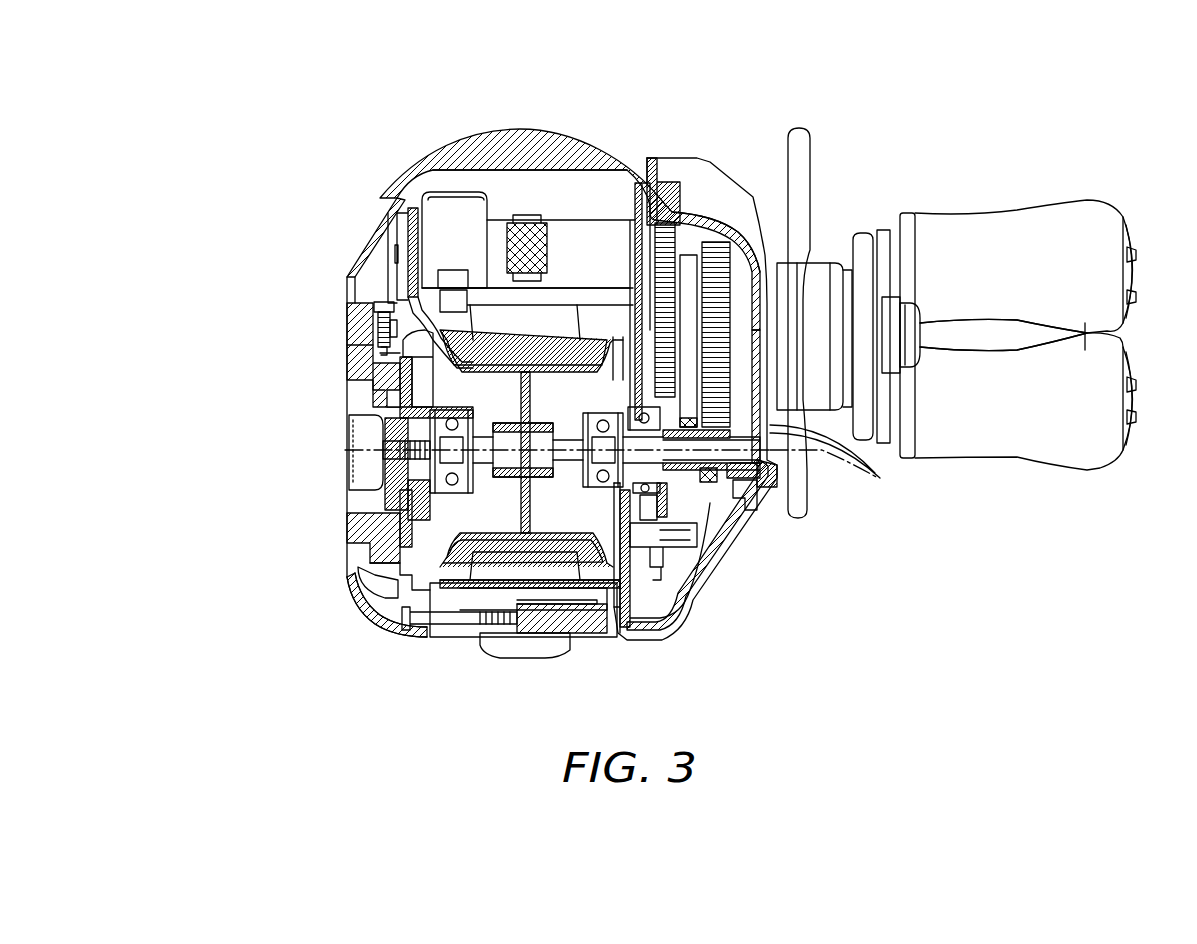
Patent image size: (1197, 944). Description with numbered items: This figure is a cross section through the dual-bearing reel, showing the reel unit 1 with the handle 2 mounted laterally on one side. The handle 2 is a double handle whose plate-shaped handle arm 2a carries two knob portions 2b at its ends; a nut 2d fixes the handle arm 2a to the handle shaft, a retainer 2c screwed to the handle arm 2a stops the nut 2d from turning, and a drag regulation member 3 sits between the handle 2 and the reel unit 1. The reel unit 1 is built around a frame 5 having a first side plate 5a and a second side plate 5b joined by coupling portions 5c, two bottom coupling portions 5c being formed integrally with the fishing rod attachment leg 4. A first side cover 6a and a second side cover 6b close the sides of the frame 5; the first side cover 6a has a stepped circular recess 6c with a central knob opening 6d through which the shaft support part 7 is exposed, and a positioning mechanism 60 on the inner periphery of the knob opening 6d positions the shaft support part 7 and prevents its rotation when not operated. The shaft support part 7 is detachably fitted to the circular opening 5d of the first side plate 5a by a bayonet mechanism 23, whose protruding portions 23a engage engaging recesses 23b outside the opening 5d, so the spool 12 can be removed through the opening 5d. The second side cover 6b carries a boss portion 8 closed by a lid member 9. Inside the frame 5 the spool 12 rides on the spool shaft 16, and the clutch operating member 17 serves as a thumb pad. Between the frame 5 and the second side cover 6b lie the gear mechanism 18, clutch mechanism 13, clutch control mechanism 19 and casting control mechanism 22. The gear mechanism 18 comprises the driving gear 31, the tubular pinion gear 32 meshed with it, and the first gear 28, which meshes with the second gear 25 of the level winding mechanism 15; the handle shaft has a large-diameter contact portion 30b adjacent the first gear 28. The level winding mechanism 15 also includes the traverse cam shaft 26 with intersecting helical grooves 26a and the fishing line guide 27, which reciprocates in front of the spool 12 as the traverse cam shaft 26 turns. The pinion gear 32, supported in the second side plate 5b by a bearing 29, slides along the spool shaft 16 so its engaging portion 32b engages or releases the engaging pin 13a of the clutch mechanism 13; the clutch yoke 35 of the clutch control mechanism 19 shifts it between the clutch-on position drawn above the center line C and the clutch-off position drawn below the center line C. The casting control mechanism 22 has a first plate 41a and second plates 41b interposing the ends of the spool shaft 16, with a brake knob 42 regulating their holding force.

The reel unit 1 is at (606, 172).
The handle 2 is at (935, 185).
The handle arm 2a is at (872, 235).
The knob portions 2b is at (1070, 222).
The retainer 2c is at (900, 257).
The nut 2d is at (913, 360).
The drag regulation member 3 is at (770, 493).
The fishing rod attachment leg 4 is at (545, 648).
The frame 5 is at (628, 168).
The first side plate 5a is at (405, 275).
The second side plate 5b is at (650, 178).
The coupling portions 5c is at (515, 610).
The circular opening 5d is at (380, 312).
The first side cover 6a is at (359, 205).
The second side cover 6b is at (741, 559).
The circular recess 6c is at (365, 343).
The knob opening 6d is at (355, 515).
The shaft support part 7 is at (370, 408).
The boss portion 8 is at (765, 490).
The lid member 9 is at (778, 485).
The spool 12 is at (560, 345).
The clutch mechanism 13 is at (600, 485).
The engaging pin 13a is at (615, 430).
The level winding mechanism 15 is at (518, 228).
The spool shaft 16 is at (500, 432).
The clutch operating member 17 is at (535, 630).
The gear mechanism 18 is at (690, 262).
The clutch control mechanism 19 is at (716, 505).
The casting control mechanism 22 is at (341, 449).
The bayonet mechanism 23 is at (375, 570).
The protruding portions 23a is at (380, 598).
The engaging recesses 23b is at (395, 615).
The second gear 25 is at (662, 178).
The traverse cam shaft 26 is at (478, 190).
The helical grooves 26a is at (440, 240).
The fishing line guide 27 is at (392, 185).
The first gear 28 is at (690, 322).
The bearing 29 is at (645, 605).
The large-diameter contact portion 30b is at (715, 242).
The driving gear 31 is at (805, 215).
The pinion gear 32 is at (680, 500).
The engaging portion 32b is at (628, 640).
The clutch yoke 35 is at (712, 488).
The first plate 41a is at (395, 470).
The second plates 41b is at (905, 468).
The brake knob 42 is at (395, 450).
The positioning mechanism 60 is at (358, 327).
The center line C is at (833, 475).